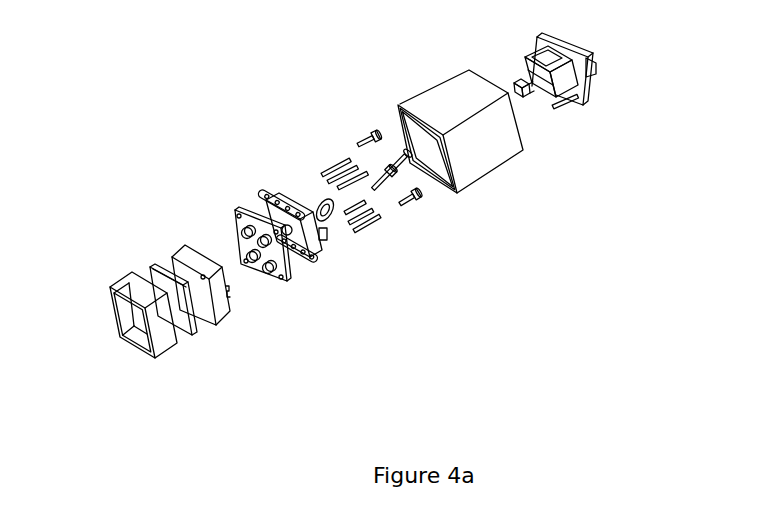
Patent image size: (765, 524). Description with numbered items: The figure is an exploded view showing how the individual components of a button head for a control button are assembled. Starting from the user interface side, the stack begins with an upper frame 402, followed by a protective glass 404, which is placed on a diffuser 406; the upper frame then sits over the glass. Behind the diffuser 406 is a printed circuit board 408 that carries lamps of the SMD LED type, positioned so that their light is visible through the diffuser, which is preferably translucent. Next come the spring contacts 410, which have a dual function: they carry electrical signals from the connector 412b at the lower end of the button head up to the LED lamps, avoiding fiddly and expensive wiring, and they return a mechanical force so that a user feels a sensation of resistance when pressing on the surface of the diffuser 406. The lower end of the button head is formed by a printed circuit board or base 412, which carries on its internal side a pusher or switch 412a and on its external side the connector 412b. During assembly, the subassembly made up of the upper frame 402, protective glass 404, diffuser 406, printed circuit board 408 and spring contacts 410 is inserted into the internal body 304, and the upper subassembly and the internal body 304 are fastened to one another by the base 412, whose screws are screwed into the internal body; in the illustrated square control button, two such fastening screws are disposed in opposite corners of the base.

The upper frame 402 is at (121, 349).
The protective glass 404 is at (192, 343).
The diffuser 406 is at (220, 332).
The printed circuit board 408 is at (274, 291).
The spring contacts 410 is at (375, 242).
The internal body 304 is at (496, 187).
The base 412 is at (613, 102).
The pusher or switch 412a is at (537, 116).
The connector 412b is at (611, 47).